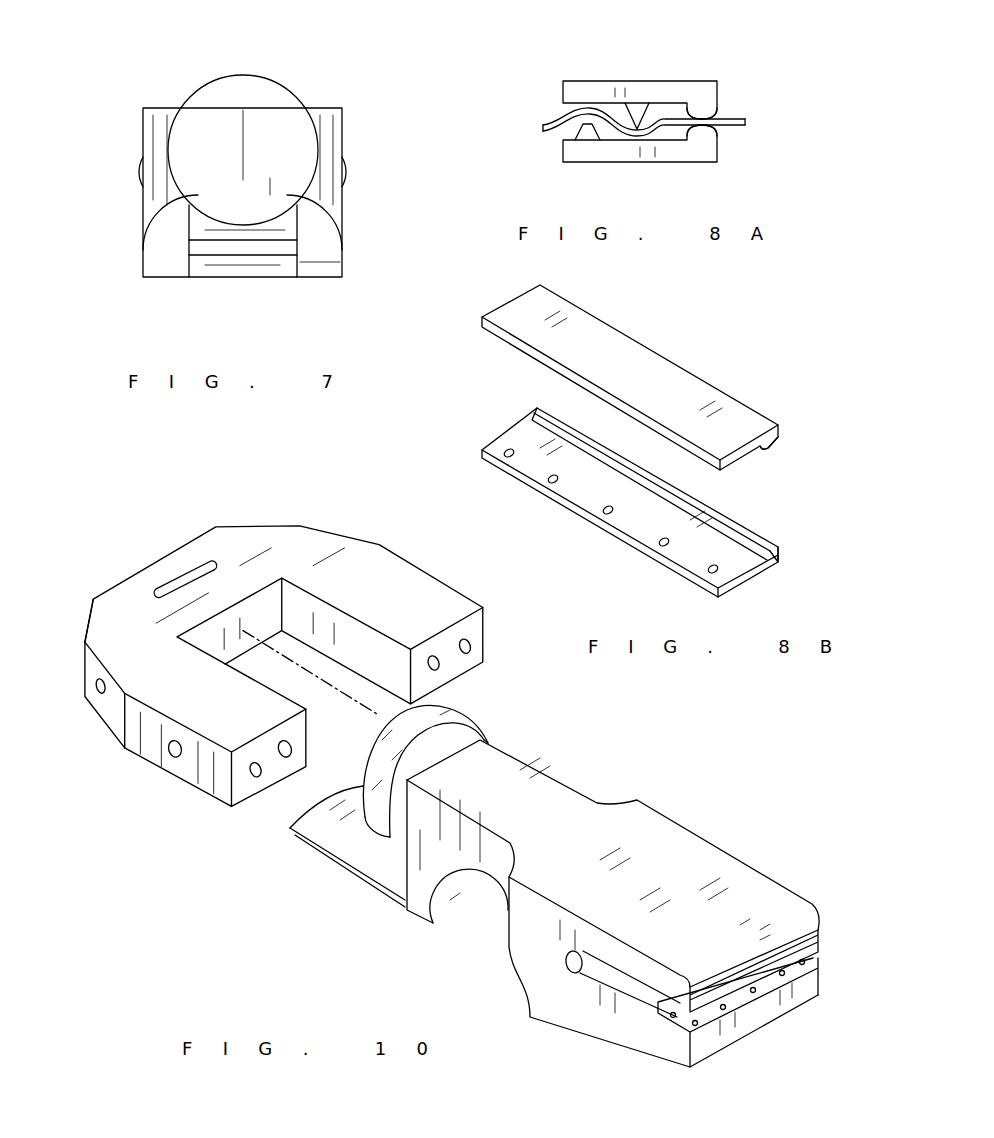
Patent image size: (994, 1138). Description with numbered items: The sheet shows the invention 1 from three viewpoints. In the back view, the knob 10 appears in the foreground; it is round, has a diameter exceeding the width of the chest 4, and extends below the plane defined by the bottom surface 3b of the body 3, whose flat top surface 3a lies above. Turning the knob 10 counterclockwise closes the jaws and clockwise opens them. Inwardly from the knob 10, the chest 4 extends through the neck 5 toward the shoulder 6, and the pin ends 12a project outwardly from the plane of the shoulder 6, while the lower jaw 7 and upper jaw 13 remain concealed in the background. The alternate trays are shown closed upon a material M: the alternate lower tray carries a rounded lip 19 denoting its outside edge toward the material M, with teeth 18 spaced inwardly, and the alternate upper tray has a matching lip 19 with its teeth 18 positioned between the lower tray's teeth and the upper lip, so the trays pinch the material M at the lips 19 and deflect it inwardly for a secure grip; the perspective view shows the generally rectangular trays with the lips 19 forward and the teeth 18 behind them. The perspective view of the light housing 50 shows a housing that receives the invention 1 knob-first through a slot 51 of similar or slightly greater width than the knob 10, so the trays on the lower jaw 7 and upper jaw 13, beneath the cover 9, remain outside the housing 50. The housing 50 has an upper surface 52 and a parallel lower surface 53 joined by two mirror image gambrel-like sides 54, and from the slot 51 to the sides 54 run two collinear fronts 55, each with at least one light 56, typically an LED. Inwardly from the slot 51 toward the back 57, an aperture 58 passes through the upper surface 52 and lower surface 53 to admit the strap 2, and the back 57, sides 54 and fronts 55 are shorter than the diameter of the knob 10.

In FIG. 7, the invention 1 is at (238, 167).
In FIG. 10, the invention 1 is at (552, 894).
In FIG. 10, the strap 2 is at (334, 828).
In FIG. 7, the body 3 is at (239, 175).
In FIG. 10, the body 3 is at (577, 837).
In FIG. 7, the flat top surface 3a is at (320, 107).
In FIG. 7, the bottom surface 3b is at (208, 273).
In FIG. 7, the chest 4 is at (257, 250).
In FIG. 7, the neck 5 is at (297, 210).
In FIG. 10, the neck 5 is at (463, 882).
In FIG. 7, the shoulder 6 is at (297, 265).
In FIG. 10, the lower jaw 7 is at (633, 1040).
In FIG. 10, the cover 9 is at (718, 897).
In FIG. 7, the knob 10 is at (198, 180).
In FIG. 10, the knob 10 is at (382, 803).
In FIG. 7, the pin ends 12a is at (140, 172).
In FIG. 10, the upper jaw 13 is at (818, 930).
In FIG. 8A, the teeth 18 is at (637, 105).
In FIG. 8B, the teeth 18 is at (657, 542).
In FIG. 8A, the lip 19 is at (722, 117).
In FIG. 8B, the lip 19 is at (778, 440).
In FIG. 8A, the material M is at (746, 122).
In FIG. 10, the light housing 50 is at (270, 653).
In FIG. 10, the slot 51 is at (313, 620).
In FIG. 10, the upper surface 52 is at (232, 540).
In FIG. 10, the lower surface 53 is at (90, 708).
In FIG. 10, the sides 54 is at (145, 713).
In FIG. 10, the fronts 55 is at (437, 655).
In FIG. 10, the light 56 is at (243, 762).
In FIG. 10, the back 57 is at (118, 563).
In FIG. 10, the aperture 58 is at (166, 583).